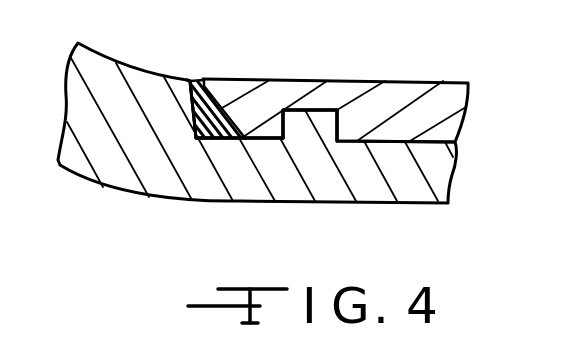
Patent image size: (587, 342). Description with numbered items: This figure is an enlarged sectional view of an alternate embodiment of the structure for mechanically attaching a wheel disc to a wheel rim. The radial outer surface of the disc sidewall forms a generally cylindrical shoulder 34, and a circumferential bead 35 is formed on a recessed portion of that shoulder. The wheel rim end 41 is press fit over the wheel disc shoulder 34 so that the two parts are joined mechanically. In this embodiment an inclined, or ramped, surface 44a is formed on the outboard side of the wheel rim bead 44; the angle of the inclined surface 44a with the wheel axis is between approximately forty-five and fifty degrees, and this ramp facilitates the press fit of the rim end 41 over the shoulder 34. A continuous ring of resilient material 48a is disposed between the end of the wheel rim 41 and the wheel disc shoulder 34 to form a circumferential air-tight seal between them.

The shoulder 34 is at (122, 175).
The wheel rim end 41 is at (398, 85).
The circumferential bead 35 is at (311, 122).
The wheel rim bead 44 is at (248, 107).
The inclined surface 44a is at (225, 82).
The continuous ring of resilient material 48a is at (230, 138).